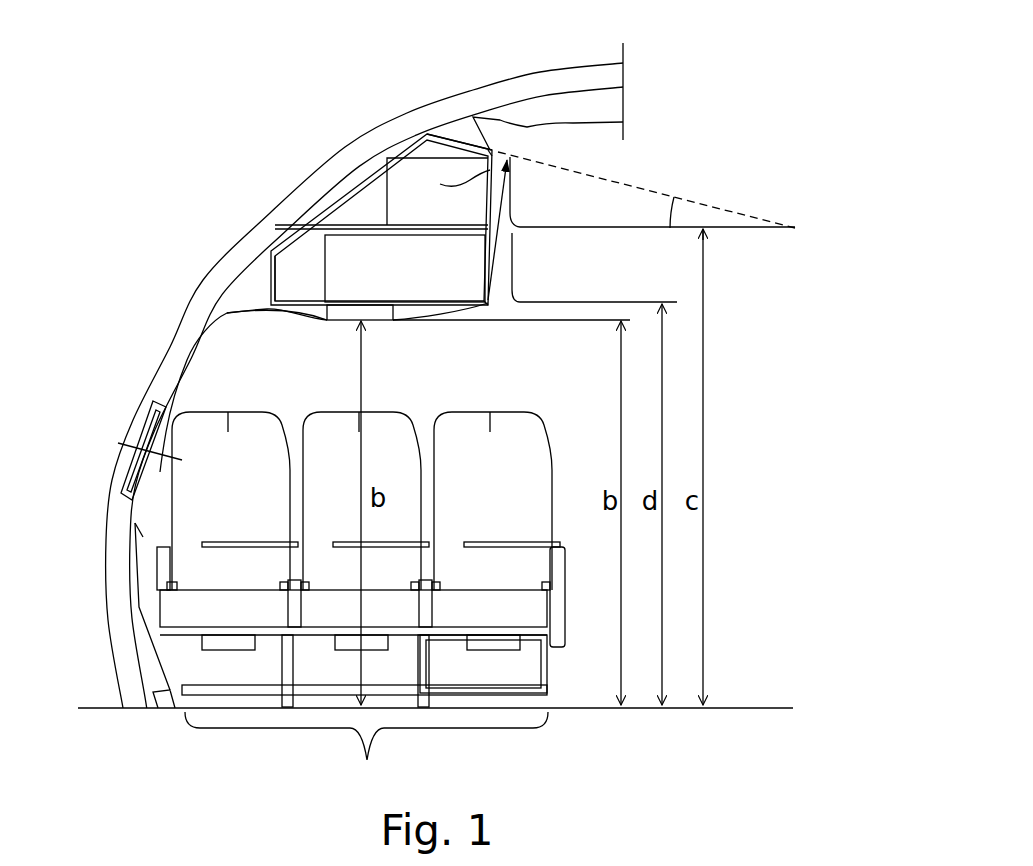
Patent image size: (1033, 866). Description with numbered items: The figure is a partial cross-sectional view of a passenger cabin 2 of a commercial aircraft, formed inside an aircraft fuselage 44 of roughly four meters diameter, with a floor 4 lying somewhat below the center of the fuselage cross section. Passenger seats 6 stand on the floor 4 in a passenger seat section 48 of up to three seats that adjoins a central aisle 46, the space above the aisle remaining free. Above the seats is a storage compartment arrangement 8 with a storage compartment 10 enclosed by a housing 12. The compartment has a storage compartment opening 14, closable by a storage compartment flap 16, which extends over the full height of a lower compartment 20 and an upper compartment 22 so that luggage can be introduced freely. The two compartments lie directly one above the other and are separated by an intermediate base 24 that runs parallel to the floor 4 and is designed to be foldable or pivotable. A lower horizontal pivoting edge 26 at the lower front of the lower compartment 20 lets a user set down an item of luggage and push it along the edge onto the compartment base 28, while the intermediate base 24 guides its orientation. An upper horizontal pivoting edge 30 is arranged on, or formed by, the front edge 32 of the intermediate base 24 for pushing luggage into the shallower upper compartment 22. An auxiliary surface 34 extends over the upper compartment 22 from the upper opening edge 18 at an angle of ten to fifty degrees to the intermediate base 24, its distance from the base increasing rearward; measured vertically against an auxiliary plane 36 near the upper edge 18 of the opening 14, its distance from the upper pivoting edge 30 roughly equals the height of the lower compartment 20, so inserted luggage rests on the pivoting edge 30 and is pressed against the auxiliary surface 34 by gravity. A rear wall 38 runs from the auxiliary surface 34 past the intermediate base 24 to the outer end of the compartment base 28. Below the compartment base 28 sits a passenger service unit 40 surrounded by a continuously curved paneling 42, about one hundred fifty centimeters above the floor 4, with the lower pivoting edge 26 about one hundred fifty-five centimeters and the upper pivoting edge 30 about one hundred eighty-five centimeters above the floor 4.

The passenger cabin 2 is at (662, 93).
The floor 4 is at (575, 702).
The passenger seats 6 is at (530, 448).
The storage compartment arrangement 8 is at (372, 137).
The storage compartment 10 is at (288, 243).
The housing 12 is at (322, 205).
The storage compartment opening 14 is at (515, 230).
The storage compartment flap 16 is at (491, 232).
The upper opening edge 18 is at (498, 150).
The lower compartment 20 is at (462, 291).
The upper compartment 22 is at (455, 167).
The intermediate base 24 is at (352, 226).
The lower horizontal pivoting edge 26 is at (492, 314).
The compartment base 28 is at (305, 295).
The upper horizontal pivoting edge 30 is at (484, 234).
The front edge 32 is at (487, 230).
The auxiliary surface 34 is at (446, 134).
The auxiliary plane 36 is at (628, 186).
The rear wall 38 is at (372, 180).
The passenger service unit 40 is at (347, 313).
The paneling 42 is at (307, 310).
The aircraft fuselage 44 is at (203, 280).
The central aisle 46 is at (680, 702).
The passenger seat sections 48 is at (365, 715).